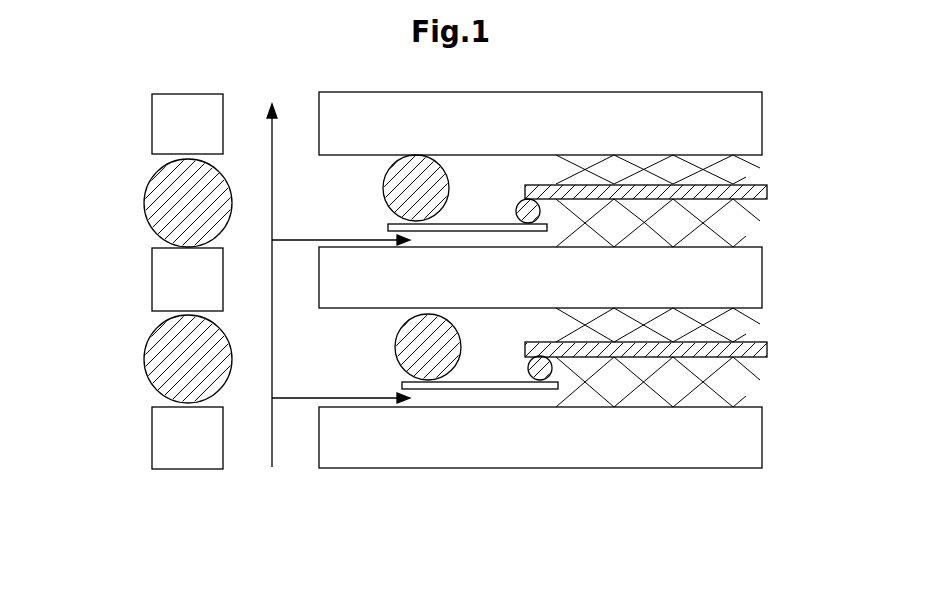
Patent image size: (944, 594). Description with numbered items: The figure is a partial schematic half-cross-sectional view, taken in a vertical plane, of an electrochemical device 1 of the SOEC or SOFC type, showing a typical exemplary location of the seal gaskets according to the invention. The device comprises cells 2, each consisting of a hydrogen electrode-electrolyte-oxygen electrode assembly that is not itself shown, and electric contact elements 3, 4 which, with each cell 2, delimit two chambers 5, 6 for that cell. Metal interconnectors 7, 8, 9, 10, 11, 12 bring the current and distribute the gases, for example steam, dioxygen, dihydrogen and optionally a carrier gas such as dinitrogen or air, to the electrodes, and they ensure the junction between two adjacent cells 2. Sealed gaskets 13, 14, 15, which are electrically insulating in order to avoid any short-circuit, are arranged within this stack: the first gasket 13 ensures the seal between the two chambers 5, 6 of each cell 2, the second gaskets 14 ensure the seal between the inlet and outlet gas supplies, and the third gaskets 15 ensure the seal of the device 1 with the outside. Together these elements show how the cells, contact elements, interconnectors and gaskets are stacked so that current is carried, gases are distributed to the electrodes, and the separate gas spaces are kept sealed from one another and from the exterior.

The electrochemical device 1 is at (318, 488).
The cell 2 is at (778, 192).
The electric contact element 3 is at (720, 180).
The electric contact element 4 is at (720, 235).
The chamber 5 is at (541, 180).
The chamber 6 is at (621, 235).
The metal interconnector 7 is at (547, 136).
The metal interconnector 8 is at (547, 289).
The metal interconnector 9 is at (547, 449).
The metal interconnector 10 is at (201, 136).
The metal interconnector 11 is at (201, 291).
The metal interconnector 12 is at (201, 450).
The first gasket 13 is at (512, 206).
The second gasket 14 is at (380, 175).
The third gasket 15 is at (140, 222).